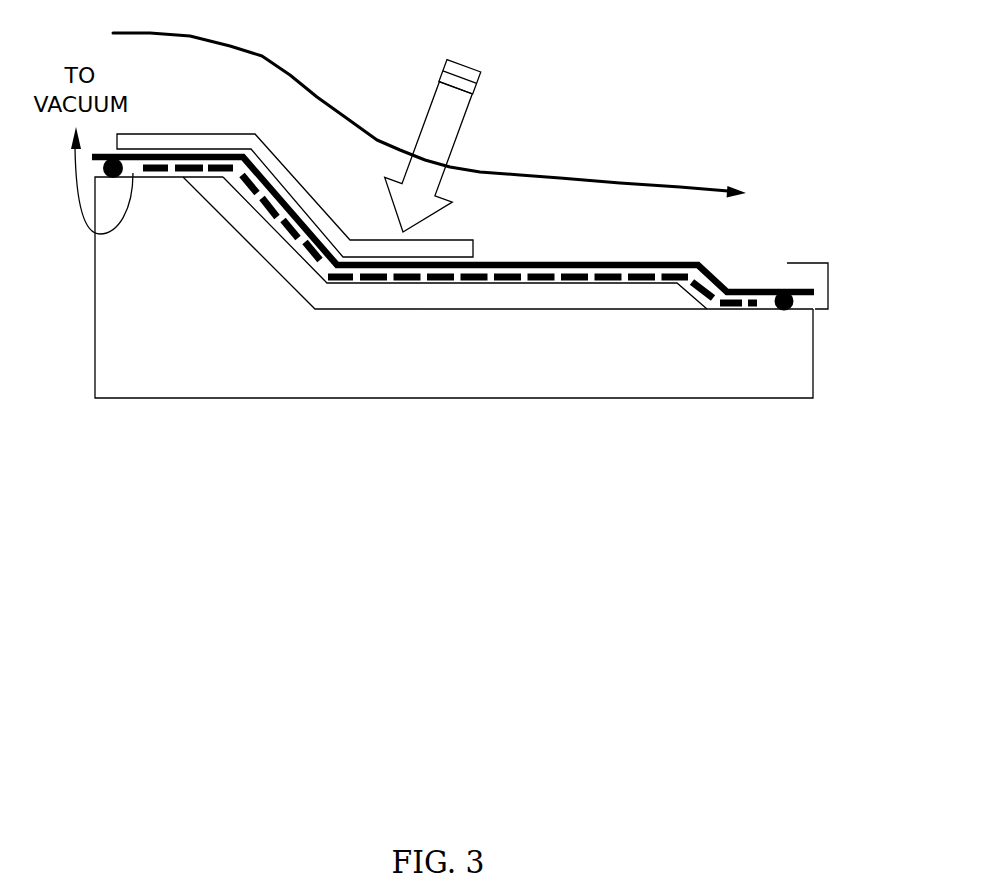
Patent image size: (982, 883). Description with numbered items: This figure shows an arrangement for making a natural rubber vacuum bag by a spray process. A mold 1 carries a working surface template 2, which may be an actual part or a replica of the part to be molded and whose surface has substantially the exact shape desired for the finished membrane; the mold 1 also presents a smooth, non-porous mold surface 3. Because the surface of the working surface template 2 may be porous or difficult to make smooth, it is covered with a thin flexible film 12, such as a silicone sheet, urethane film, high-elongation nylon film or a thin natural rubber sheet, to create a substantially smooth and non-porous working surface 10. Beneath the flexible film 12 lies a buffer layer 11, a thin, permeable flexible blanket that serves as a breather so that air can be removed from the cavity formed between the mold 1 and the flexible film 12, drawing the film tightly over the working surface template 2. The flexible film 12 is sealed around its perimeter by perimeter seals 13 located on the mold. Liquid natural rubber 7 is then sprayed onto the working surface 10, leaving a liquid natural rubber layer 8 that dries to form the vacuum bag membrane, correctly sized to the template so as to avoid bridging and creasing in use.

The mold 1 is at (167, 373).
The working surface template 2 is at (377, 298).
The mold surface 3 is at (490, 310).
The liquid natural rubber 7 is at (434, 128).
The liquid natural rubber layer 8 is at (290, 169).
The working surface 10 is at (840, 280).
The buffer layer 11 is at (272, 212).
The flexible film 12 is at (563, 260).
The perimeter seals 13 is at (800, 313).